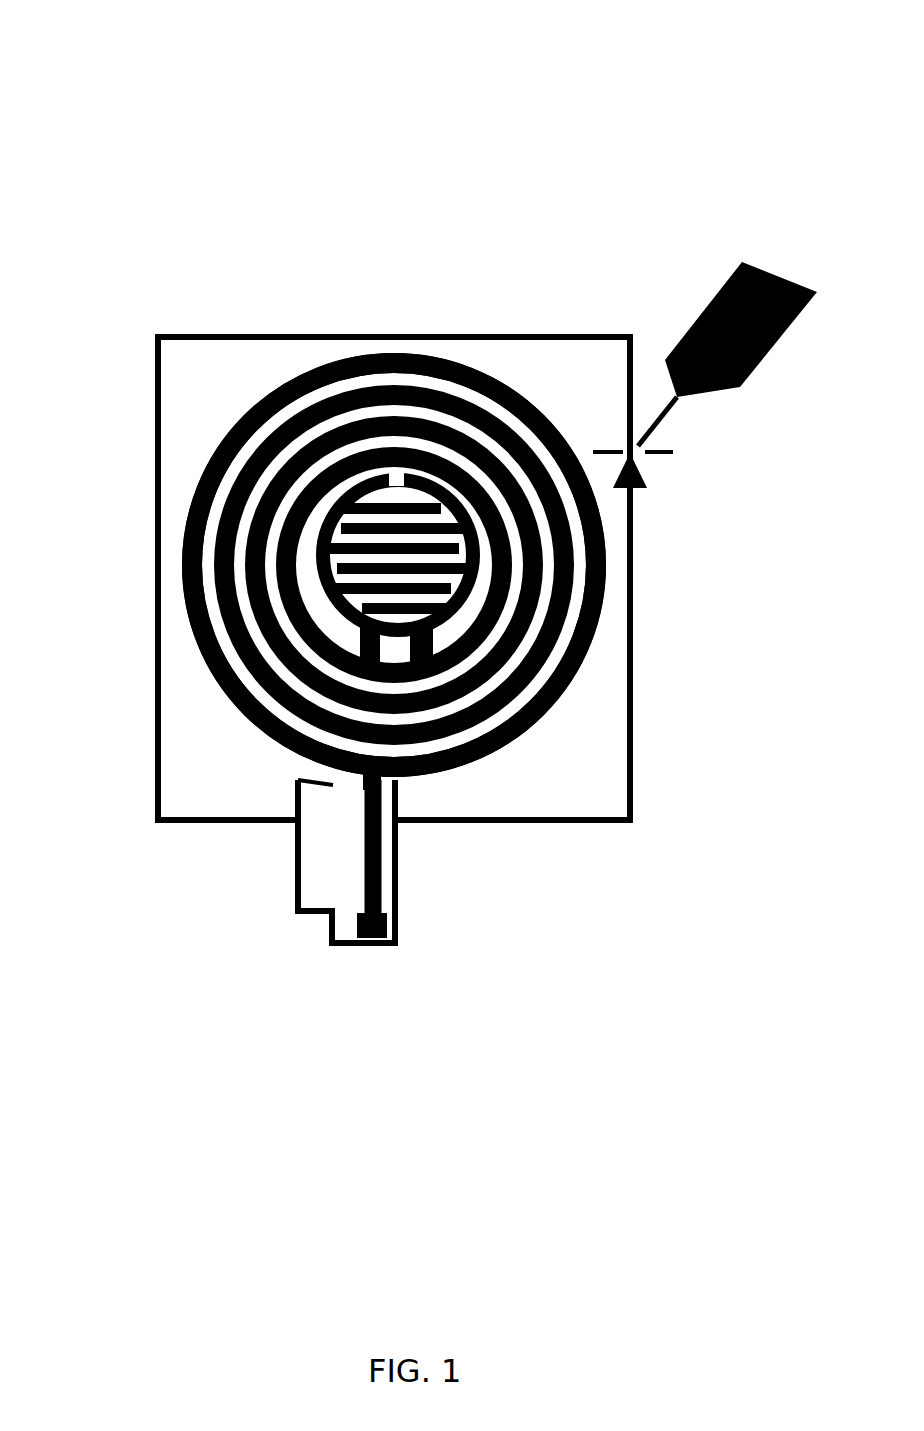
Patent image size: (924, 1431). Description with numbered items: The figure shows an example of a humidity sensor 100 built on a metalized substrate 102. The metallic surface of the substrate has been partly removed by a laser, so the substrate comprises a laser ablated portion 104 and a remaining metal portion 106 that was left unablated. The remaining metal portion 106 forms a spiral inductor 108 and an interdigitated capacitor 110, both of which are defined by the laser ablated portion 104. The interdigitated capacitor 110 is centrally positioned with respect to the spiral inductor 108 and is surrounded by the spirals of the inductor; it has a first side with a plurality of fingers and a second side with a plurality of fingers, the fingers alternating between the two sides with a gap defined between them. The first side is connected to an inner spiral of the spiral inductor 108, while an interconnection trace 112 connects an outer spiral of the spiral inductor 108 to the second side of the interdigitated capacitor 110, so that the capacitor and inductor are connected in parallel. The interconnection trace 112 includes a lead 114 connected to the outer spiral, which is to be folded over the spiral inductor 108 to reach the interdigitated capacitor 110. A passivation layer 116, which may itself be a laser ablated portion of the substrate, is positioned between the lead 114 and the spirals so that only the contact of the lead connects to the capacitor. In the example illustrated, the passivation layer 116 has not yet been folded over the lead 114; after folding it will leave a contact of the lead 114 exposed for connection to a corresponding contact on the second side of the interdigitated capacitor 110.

The sensor 100 is at (135, 122).
The metalized substrate 102 is at (212, 366).
The laser ablated portion 104 is at (175, 410).
The remaining metal portion 106 is at (188, 527).
The spiral inductor 108 is at (228, 684).
The interdigitated capacitor 110 is at (462, 575).
The interconnection trace 112 is at (418, 948).
The lead 114 is at (378, 855).
The passivation layer 116 is at (293, 875).